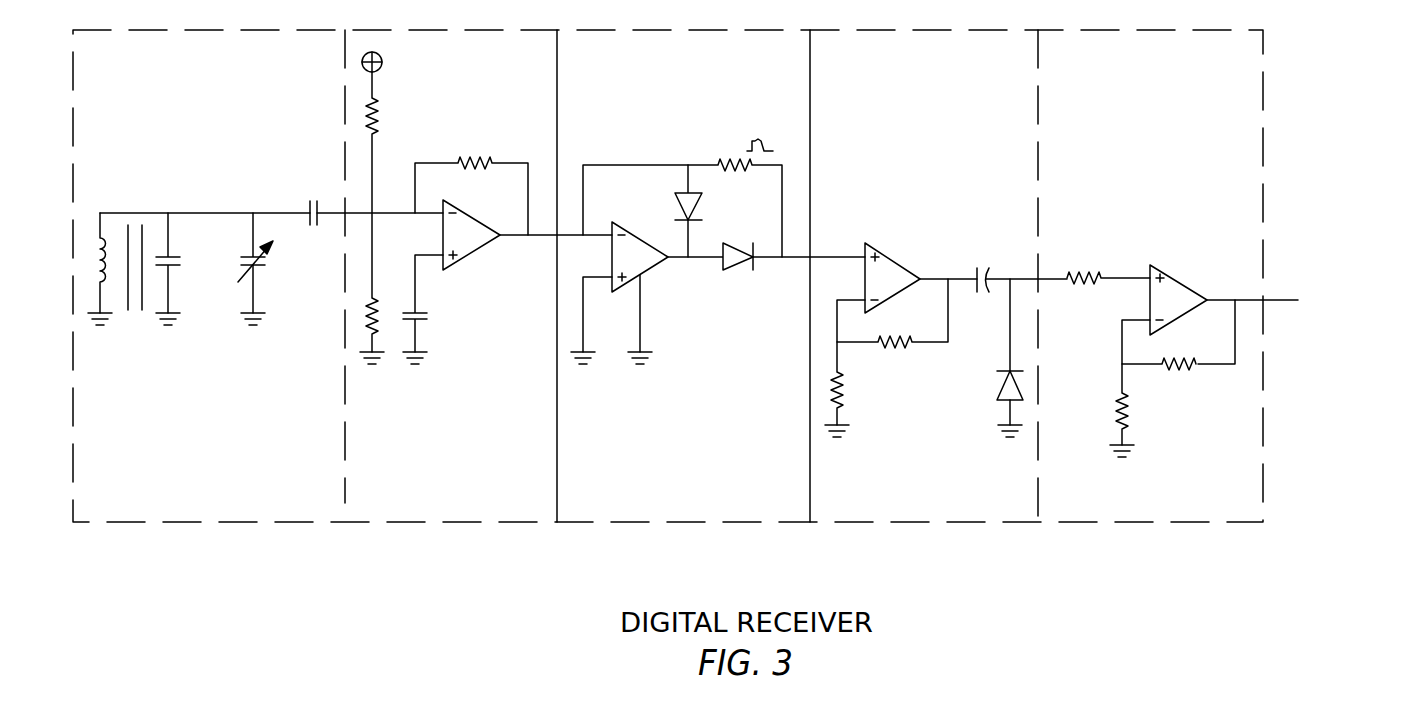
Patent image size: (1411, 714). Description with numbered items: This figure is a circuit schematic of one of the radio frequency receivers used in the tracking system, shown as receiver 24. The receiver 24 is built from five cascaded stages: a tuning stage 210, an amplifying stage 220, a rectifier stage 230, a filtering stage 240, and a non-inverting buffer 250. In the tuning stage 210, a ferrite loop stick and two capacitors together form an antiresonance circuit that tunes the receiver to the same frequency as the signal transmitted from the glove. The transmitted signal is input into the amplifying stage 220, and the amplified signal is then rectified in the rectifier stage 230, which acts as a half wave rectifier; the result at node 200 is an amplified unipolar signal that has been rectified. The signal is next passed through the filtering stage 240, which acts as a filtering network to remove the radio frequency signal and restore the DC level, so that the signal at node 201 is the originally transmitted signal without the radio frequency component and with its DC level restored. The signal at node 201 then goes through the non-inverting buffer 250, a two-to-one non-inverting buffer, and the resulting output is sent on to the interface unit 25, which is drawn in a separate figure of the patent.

The receiver 24 is at (360, 597).
The interface unit 25 is at (1304, 300).
The node 200 is at (837, 255).
The node 201 is at (1122, 277).
The tuning stage 210 is at (110, 511).
The amplifying stage 220 is at (382, 511).
The rectifier stage 230 is at (592, 511).
The filtering stage 240 is at (941, 276).
The non-inverting buffer 250 is at (1223, 365).